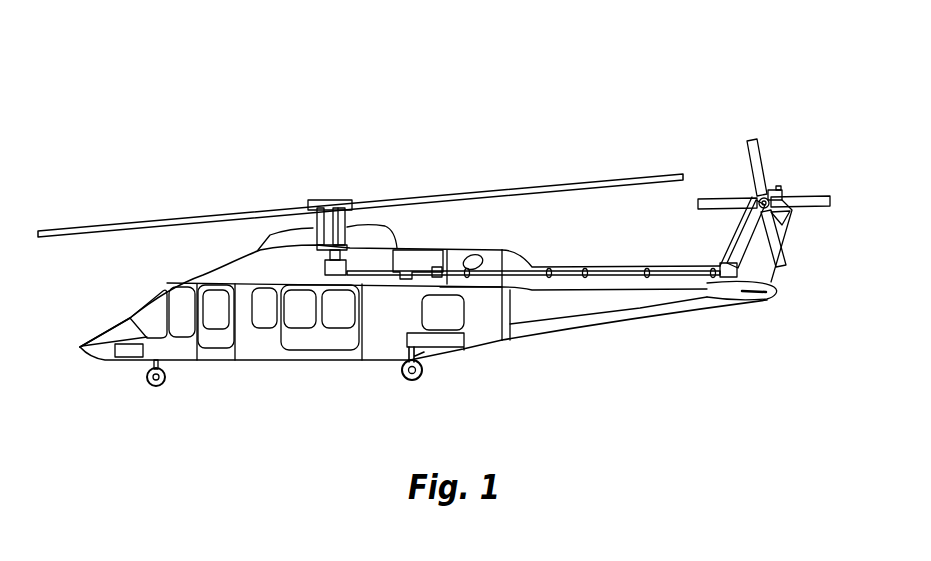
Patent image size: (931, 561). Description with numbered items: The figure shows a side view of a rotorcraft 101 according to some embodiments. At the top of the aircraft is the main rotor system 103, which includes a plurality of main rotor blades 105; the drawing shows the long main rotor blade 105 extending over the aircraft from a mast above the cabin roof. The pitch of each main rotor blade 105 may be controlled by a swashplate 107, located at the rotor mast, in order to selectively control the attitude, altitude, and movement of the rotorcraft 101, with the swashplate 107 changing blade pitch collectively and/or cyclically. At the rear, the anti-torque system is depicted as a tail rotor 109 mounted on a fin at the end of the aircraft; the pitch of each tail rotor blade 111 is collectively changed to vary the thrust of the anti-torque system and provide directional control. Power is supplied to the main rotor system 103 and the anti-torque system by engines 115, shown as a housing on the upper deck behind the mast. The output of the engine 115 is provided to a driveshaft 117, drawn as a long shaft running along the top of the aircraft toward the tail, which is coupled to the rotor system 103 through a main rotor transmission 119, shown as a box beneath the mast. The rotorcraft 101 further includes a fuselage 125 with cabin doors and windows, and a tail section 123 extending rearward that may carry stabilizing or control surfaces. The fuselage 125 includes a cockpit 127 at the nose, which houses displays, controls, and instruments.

The rotorcraft 101 is at (166, 57).
The main rotor system 103 is at (316, 167).
The main rotor blades 105 is at (555, 186).
The swashplate 107 is at (352, 238).
The tail rotor 109 is at (720, 124).
The tail rotor blades 111 is at (804, 198).
The engines 115 is at (430, 250).
The driveshaft 117 is at (378, 275).
The main rotor transmission 119 is at (325, 267).
The tail section 123 is at (685, 311).
The fuselage 125 is at (305, 362).
The cockpit 127 is at (152, 300).